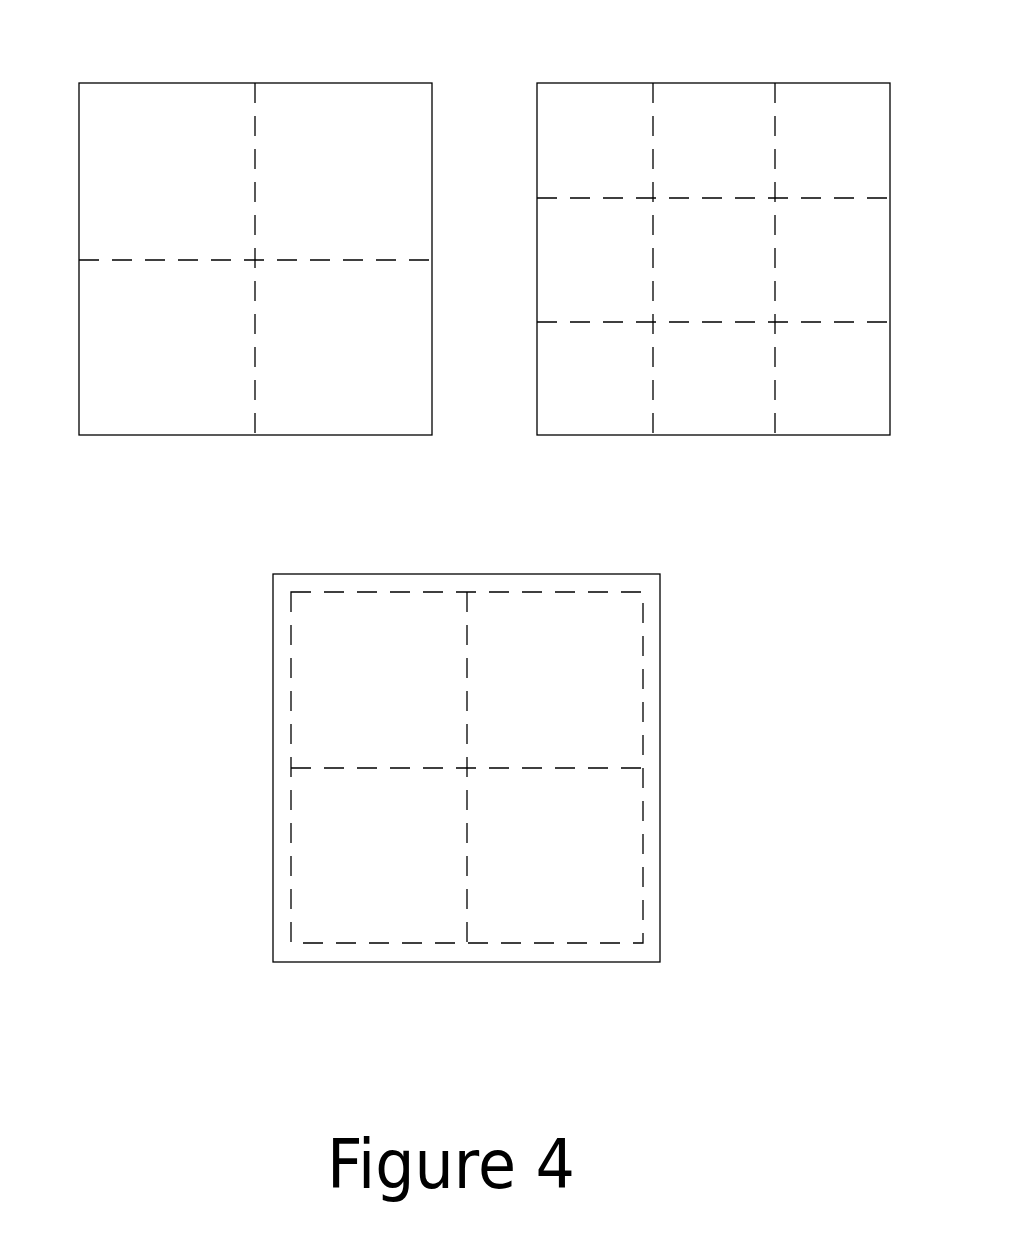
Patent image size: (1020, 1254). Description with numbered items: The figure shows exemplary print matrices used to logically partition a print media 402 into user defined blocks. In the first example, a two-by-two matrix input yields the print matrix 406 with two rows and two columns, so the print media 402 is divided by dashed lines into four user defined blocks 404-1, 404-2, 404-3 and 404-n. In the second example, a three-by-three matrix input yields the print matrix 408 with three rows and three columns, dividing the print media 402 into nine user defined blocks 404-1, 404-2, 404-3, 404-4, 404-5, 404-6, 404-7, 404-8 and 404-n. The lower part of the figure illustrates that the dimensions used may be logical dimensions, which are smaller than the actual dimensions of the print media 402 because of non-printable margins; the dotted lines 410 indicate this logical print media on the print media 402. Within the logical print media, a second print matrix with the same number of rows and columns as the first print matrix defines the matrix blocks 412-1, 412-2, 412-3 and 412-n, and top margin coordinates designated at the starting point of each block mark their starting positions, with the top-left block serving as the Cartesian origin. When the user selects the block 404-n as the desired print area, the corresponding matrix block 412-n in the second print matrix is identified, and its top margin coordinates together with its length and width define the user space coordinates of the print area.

The print media 402 is at (114, 82).
The print matrix having two rows and two columns 406 is at (226, 56).
The print matrix having three rows and three columns 408 is at (740, 52).
The dotted lines indicating the logical print media 410 is at (292, 700).
The user defined block 404-1 is at (207, 181).
The user defined block 404-2 is at (366, 181).
The user defined block 404-3 is at (207, 341).
The user defined block 404-4 is at (620, 269).
The user defined block 404-5 is at (744, 269).
The user defined block 404-6 is at (860, 269).
The user defined block 404-7 is at (620, 392).
The user defined block 404-8 is at (744, 392).
The user defined block 404-n is at (366, 341).
The matrix block of the second print matrix 412-1 is at (409, 694).
The matrix block of the second print matrix 412-2 is at (586, 694).
The matrix block of the second print matrix 412-3 is at (409, 869).
The matrix block of the second print matrix 412-n is at (594, 869).